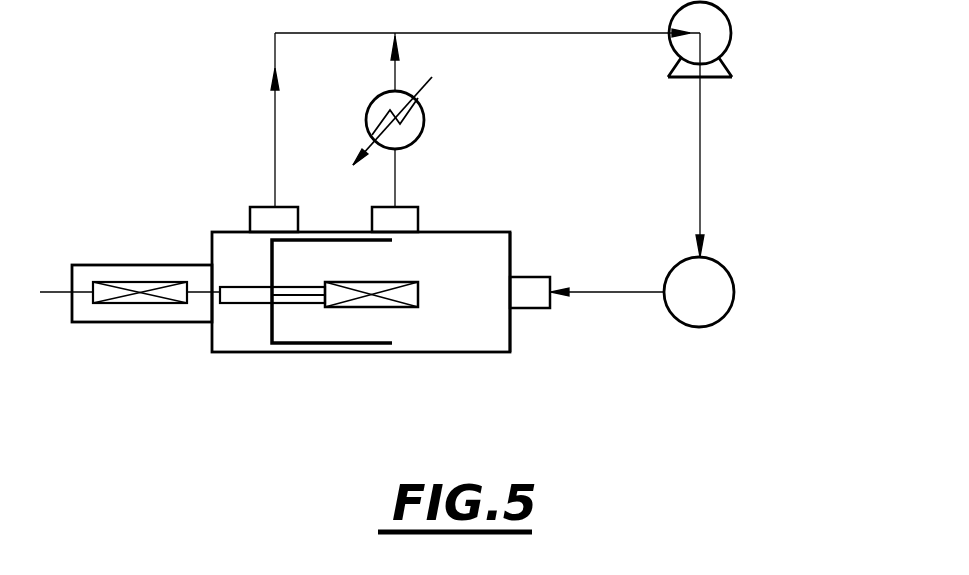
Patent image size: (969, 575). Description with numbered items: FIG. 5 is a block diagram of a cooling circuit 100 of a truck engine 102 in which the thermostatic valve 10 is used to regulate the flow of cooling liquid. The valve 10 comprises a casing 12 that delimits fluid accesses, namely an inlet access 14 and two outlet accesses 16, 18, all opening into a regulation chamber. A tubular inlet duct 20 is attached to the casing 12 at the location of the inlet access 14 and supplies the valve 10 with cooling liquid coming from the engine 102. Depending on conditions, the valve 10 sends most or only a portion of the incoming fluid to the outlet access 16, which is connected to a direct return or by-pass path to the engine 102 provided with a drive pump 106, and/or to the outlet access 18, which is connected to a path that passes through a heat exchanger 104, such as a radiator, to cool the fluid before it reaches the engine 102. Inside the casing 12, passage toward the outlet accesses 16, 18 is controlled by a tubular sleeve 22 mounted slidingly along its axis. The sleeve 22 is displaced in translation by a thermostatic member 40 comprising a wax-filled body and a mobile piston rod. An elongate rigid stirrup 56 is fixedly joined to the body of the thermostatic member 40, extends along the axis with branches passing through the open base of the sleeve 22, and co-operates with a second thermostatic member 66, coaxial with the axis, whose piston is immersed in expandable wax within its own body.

The valve 10 is at (194, 375).
The casing 12 is at (430, 368).
The inlet access 14 is at (503, 292).
The outlet access 16 is at (250, 216).
The outlet access 18 is at (418, 218).
The tubular inlet duct 20 is at (535, 308).
The tubular sleeve 22 is at (327, 345).
The thermostatic member 40 is at (418, 296).
The elongate rigid stirrup 56 is at (245, 318).
The thermostatic member 66 is at (130, 305).
The cooling circuit 100 is at (230, 43).
The truck engine 102 is at (734, 292).
The heat exchanger 104 is at (425, 122).
The drive pump 106 is at (732, 33).